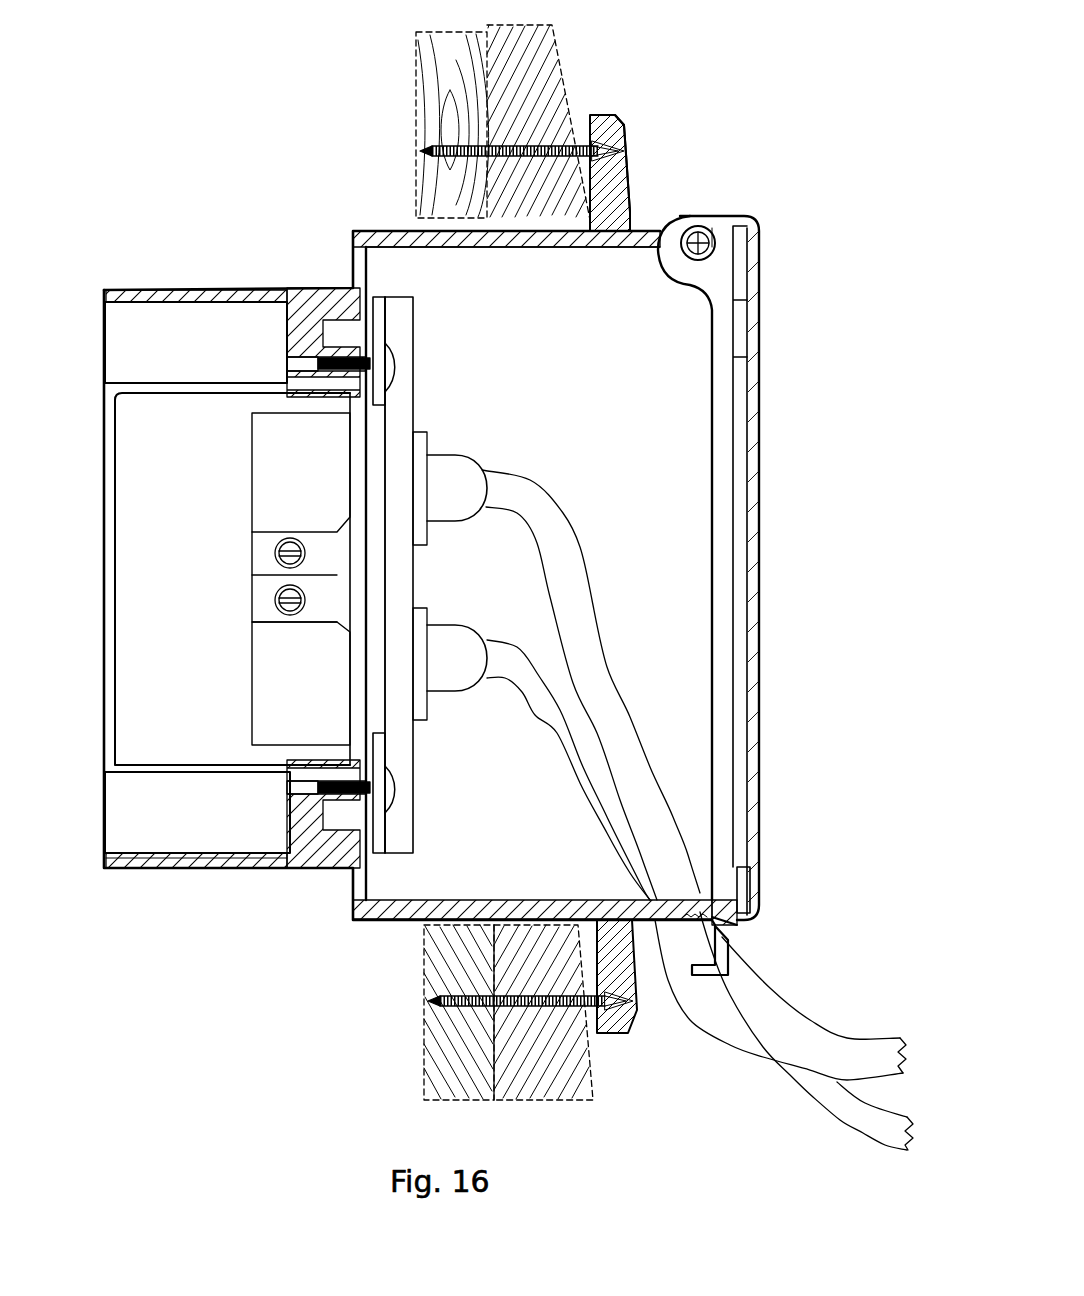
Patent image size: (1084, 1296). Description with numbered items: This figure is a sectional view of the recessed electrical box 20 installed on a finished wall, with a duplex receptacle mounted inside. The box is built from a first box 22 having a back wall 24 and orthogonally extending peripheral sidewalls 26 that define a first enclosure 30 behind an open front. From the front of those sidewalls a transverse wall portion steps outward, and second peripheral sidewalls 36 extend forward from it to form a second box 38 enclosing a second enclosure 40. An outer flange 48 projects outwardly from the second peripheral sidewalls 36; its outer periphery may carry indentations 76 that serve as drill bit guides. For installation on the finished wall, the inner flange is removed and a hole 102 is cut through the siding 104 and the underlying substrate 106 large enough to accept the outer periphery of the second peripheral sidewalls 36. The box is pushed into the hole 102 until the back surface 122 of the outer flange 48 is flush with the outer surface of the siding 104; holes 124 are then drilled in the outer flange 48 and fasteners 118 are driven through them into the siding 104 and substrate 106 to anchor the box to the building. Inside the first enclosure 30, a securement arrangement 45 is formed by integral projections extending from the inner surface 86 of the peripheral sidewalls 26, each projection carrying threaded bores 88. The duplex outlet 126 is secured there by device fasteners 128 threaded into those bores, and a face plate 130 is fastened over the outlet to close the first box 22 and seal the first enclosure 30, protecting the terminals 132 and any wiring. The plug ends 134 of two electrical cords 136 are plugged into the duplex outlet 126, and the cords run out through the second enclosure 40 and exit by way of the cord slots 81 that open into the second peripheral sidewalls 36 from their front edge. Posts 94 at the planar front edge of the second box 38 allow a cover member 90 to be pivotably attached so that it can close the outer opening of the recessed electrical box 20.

The recessed electrical box 20 is at (208, 236).
The first box 22 is at (200, 635).
The back wall 24 is at (104, 565).
The peripheral sidewalls 26 is at (223, 893).
The first enclosure 30 is at (179, 576).
The second peripheral sidewalls 36 is at (400, 922).
The second box 38 is at (668, 203).
The second enclosure 40 is at (532, 358).
The securement arrangement 45 is at (307, 805).
The outer flange 48 is at (609, 247).
The indentations 76 is at (626, 145).
The cord slots 81 is at (668, 975).
The inner surface 86 is at (180, 410).
The threaded bores 88 is at (302, 372).
The cover member 90 is at (762, 566).
The posts 94 is at (715, 220).
The hole 102 is at (600, 232).
The siding 104 is at (532, 55).
The substrate 106 is at (445, 56).
The fasteners 118 is at (592, 135).
The back surface 122 is at (576, 172).
The holes 124 is at (622, 118).
The duplex outlet 126 is at (335, 440).
The device fasteners 128 is at (396, 362).
The face plate 130 is at (405, 574).
The terminals 132 is at (288, 613).
The plug ends 134 is at (438, 501).
The electrical cords 136 is at (568, 570).